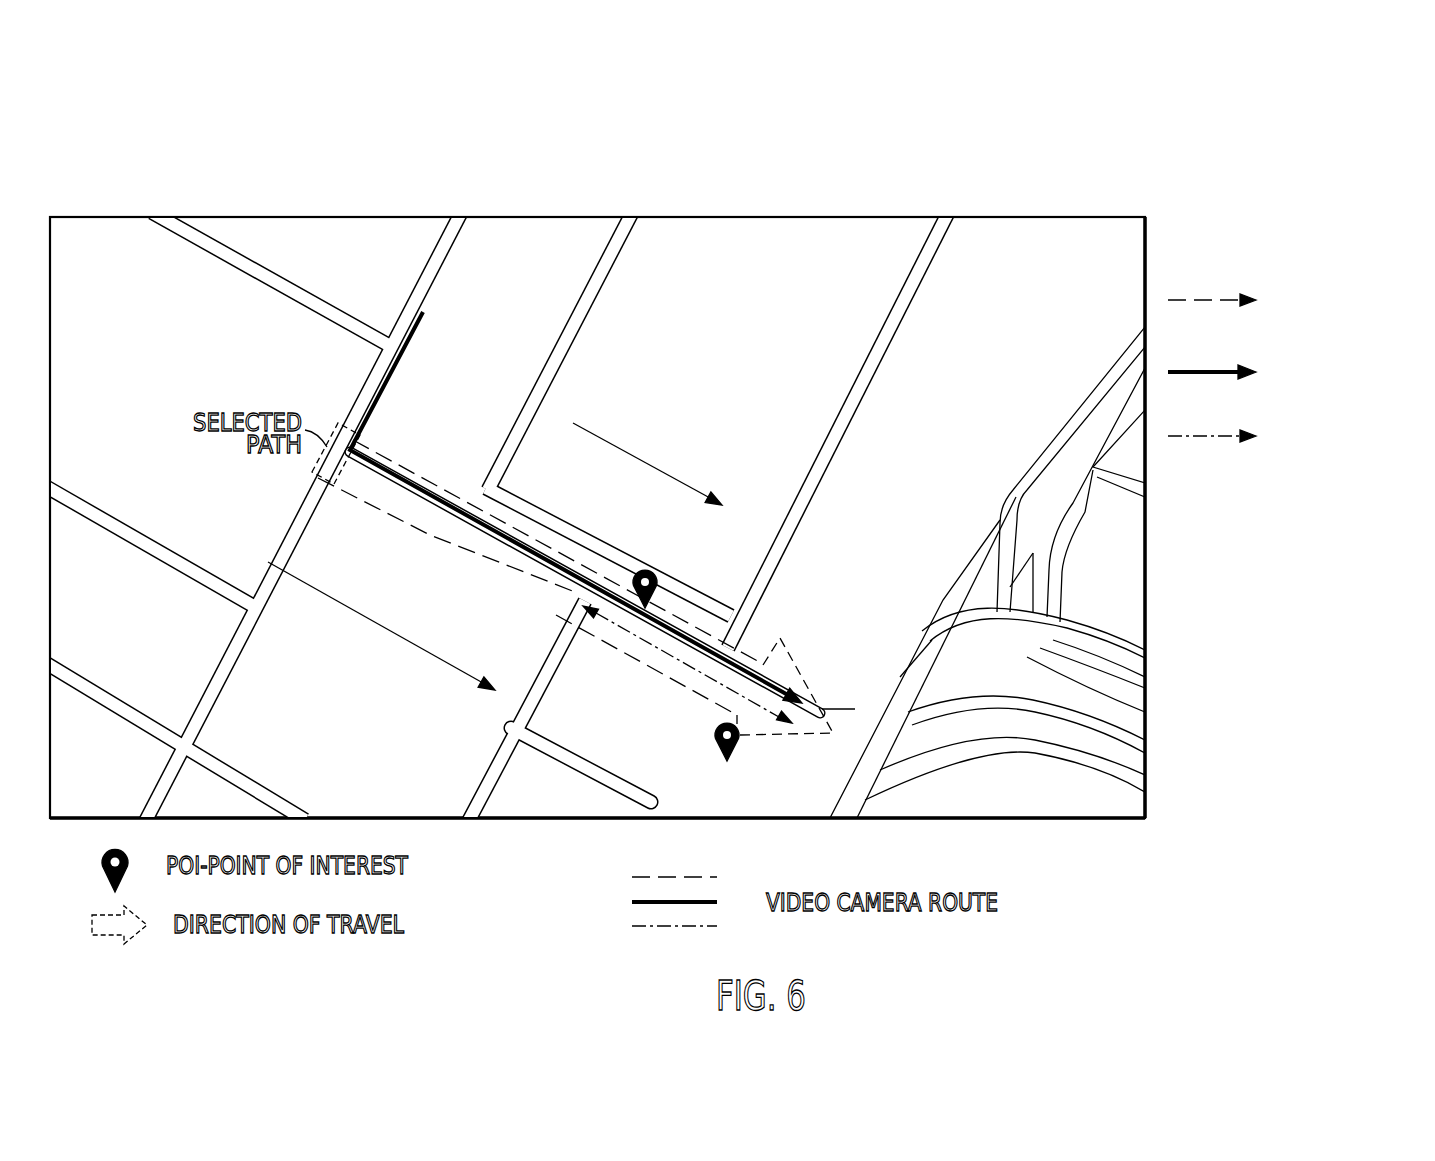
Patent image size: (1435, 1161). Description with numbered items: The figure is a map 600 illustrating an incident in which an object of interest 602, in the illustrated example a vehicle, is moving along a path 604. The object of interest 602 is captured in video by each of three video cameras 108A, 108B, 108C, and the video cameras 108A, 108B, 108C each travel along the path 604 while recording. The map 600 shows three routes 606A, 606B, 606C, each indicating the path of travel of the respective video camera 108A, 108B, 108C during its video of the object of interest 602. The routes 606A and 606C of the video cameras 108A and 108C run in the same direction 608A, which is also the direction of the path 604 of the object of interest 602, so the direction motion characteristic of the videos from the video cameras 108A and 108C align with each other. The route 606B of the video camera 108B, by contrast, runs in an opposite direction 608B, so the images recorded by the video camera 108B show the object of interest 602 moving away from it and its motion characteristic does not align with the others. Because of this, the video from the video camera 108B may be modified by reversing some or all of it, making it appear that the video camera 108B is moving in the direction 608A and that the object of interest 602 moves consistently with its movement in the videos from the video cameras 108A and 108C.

The map 600 is at (127, 155).
The object of interest 602 is at (658, 577).
The path 604 is at (798, 668).
The route 606A is at (392, 466).
The route 606B is at (688, 668).
The route 606C is at (467, 532).
The direction 608A is at (377, 628).
The direction 608B is at (643, 460).
The video camera 108A is at (1372, 408).
The video camera 108B is at (1372, 474).
The video camera 108C is at (1372, 340).